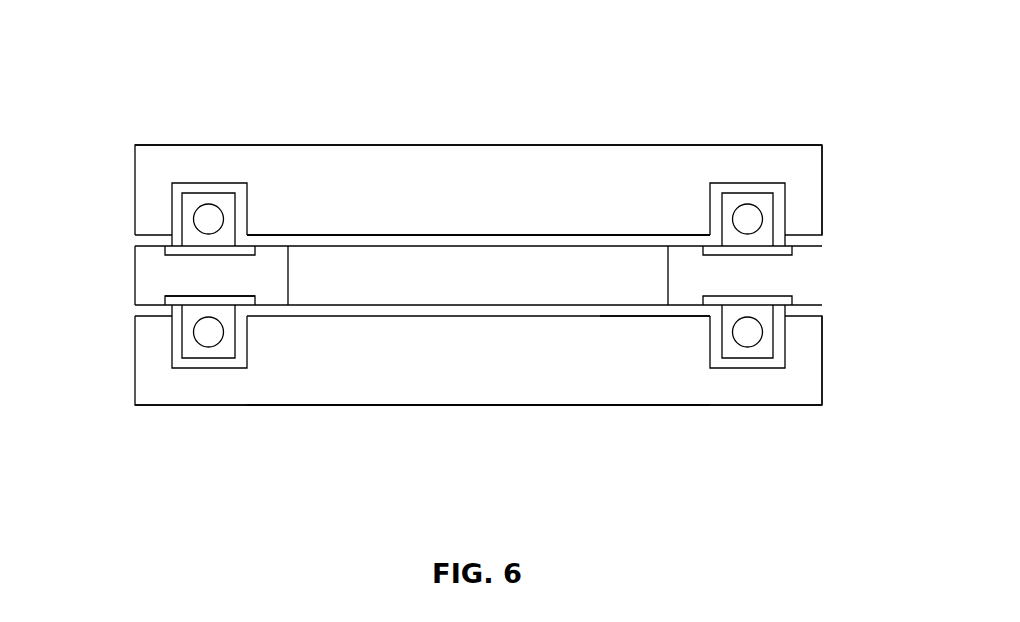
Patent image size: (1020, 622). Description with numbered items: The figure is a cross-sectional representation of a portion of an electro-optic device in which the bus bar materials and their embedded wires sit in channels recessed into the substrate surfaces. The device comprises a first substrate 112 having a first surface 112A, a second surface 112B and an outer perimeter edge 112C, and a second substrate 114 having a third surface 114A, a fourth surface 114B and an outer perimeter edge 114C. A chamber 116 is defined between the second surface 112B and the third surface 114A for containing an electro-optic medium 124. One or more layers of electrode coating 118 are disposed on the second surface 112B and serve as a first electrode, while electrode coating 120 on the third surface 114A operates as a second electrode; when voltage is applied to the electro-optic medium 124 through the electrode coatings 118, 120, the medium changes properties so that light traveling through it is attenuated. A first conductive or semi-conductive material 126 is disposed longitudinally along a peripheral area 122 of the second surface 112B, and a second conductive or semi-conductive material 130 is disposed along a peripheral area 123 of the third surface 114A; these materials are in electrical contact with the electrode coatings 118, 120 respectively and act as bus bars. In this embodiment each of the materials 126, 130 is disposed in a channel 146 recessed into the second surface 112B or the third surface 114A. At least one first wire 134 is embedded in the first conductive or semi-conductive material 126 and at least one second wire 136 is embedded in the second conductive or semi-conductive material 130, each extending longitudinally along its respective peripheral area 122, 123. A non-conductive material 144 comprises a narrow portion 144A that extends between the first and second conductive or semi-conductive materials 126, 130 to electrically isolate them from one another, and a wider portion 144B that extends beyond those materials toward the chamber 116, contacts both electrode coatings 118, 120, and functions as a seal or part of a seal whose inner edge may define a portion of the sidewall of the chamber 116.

The first substrate 112 is at (308, 178).
The first surface 112A is at (387, 143).
The second surface 112B is at (450, 225).
The outer perimeter edge 112C is at (823, 167).
The second substrate 114 is at (298, 375).
The third surface 114A is at (357, 405).
The fourth surface 114B is at (378, 407).
The outer perimeter edge 114C is at (823, 385).
The chamber 116 is at (497, 267).
The electrode coating 118 is at (630, 240).
The electrode coating 120 is at (560, 312).
The peripheral area 122 is at (676, 235).
The peripheral area 123 is at (628, 318).
The electro-optic medium 124 is at (555, 267).
The first conductive or semi-conductive material 126 is at (203, 218).
The second conductive or semi-conductive material 130 is at (205, 332).
The first wire 134 is at (193, 243).
The second wire 136 is at (193, 308).
The non-conductive material 144 is at (260, 267).
The narrow portion 144A is at (152, 273).
The wider portion 144B is at (270, 293).
The channel 146 is at (190, 202).